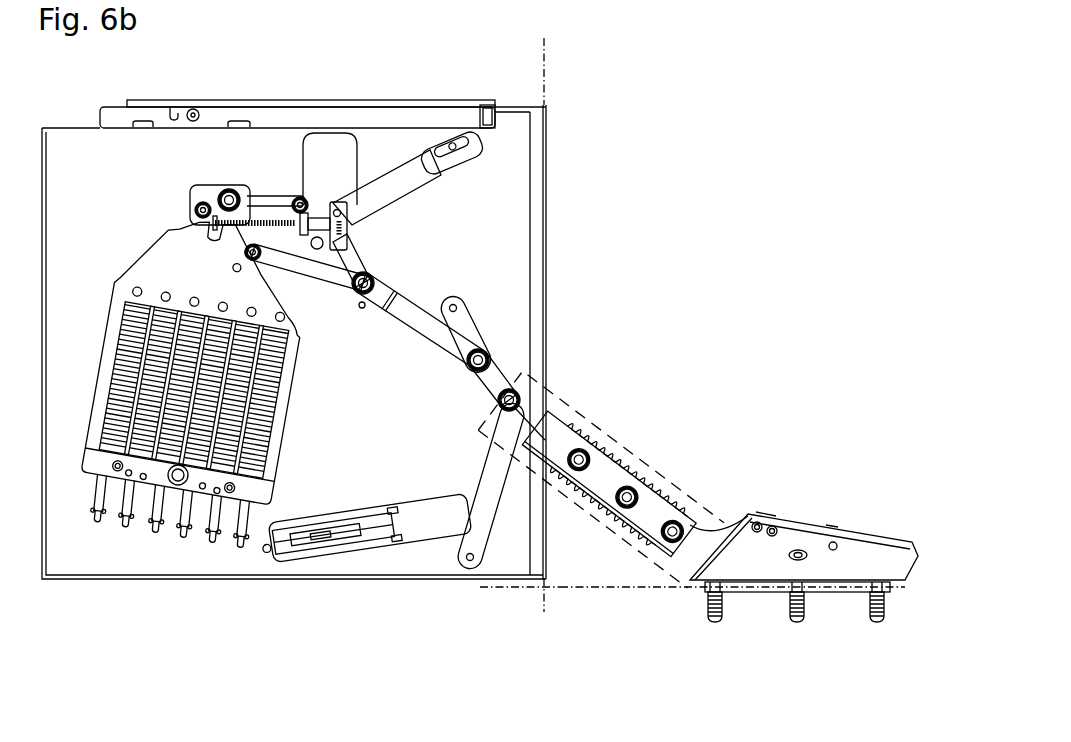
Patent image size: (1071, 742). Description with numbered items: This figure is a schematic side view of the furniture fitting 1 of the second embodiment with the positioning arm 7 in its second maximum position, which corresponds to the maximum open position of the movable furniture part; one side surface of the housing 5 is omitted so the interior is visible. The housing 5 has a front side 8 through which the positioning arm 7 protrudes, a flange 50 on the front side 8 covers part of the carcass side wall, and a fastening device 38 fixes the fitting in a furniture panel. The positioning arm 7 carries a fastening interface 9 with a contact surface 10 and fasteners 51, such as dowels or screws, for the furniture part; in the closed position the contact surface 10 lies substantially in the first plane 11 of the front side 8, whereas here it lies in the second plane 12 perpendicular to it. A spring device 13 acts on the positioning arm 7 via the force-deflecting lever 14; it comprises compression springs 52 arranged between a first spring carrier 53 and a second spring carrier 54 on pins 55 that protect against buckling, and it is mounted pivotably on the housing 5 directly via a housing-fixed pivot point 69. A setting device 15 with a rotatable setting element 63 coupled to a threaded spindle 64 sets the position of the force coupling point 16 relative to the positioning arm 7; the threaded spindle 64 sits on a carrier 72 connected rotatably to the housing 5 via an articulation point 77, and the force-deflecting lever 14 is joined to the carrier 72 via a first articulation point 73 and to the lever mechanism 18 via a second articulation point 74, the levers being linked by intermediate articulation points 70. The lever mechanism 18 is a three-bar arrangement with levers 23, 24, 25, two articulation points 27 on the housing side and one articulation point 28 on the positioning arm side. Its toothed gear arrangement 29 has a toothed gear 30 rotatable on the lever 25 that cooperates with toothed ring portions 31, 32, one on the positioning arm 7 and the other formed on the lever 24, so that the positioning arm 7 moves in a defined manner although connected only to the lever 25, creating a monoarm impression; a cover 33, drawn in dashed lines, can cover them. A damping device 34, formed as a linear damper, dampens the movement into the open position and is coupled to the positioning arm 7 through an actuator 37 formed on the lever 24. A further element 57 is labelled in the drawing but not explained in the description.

The furniture fitting 1 is at (757, 98).
The housing 5 is at (76, 152).
The positioning arm 7 is at (826, 480).
The front side 8 is at (548, 188).
The fastening interface 9 is at (690, 617).
The contact surface 10 is at (832, 592).
The first plane 11 is at (543, 590).
The second plane 12 is at (580, 588).
The spring device 13 is at (295, 394).
The force-deflecting lever 14 is at (412, 320).
The setting device 15 is at (507, 150).
The force coupling point 16 is at (226, 190).
The lever mechanism 18 is at (620, 380).
The lever 23 is at (463, 327).
The lever 24 is at (507, 505).
The lever 25 is at (607, 480).
The articulation points on the housing side 27 is at (456, 305).
The articulation point on the positioning arm side 28 is at (700, 523).
The toothed gear arrangement 29 is at (630, 428).
The toothed gear 30 is at (610, 520).
The toothed ring portion 31 is at (677, 517).
The toothed ring portion 32 is at (585, 433).
The cover 33 is at (640, 530).
The damping device 34 is at (350, 573).
The actuator 37 is at (463, 500).
The fastening device 38 is at (317, 96).
The flange 50 is at (535, 223).
The fasteners 51 is at (793, 622).
The springs 52 is at (125, 345).
The first spring carrier 53 is at (205, 270).
The second spring carrier 54 is at (103, 465).
The pins 55 is at (122, 528).
The frame wall 57 is at (93, 142).
The setting element 63 is at (483, 160).
The threaded spindle 64 is at (268, 207).
The pivot point 69 is at (177, 486).
The intermediate articulation points 70 is at (498, 402).
The carrier 72 is at (345, 265).
The first articulation point 73 is at (362, 306).
The second articulation point 74 is at (468, 358).
The articulation point 77 is at (232, 191).